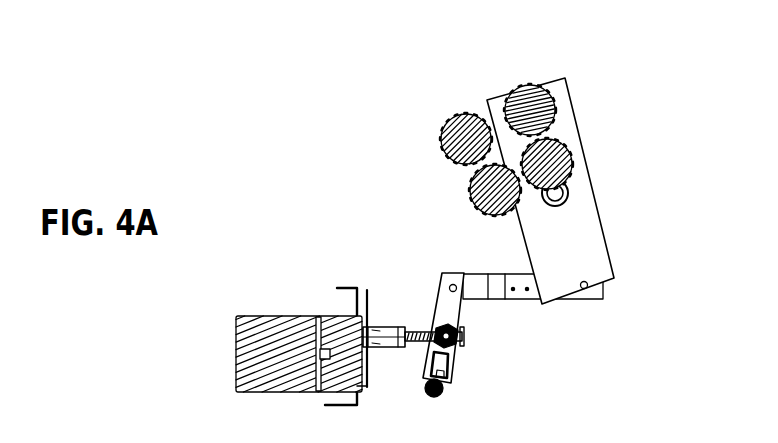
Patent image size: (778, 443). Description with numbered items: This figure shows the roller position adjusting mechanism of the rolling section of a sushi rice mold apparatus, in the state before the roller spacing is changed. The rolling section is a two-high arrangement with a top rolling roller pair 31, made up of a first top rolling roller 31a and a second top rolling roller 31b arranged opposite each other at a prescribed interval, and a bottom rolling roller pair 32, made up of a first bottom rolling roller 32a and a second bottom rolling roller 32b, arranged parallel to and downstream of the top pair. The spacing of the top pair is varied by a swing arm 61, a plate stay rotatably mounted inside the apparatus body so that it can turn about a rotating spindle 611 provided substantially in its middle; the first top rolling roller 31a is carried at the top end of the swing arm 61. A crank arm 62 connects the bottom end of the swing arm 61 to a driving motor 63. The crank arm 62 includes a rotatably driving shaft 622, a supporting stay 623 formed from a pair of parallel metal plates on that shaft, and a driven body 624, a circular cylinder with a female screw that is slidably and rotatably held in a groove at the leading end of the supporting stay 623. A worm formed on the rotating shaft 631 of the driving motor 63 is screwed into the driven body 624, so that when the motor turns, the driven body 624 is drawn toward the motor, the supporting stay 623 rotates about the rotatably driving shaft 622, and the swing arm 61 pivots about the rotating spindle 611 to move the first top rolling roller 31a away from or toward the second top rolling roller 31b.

The top rolling roller pair 31 is at (498, 86).
The first top rolling roller 31a is at (523, 84).
The second top rolling roller 31b is at (462, 112).
The bottom rolling roller pair 32 is at (585, 163).
The first bottom rolling roller 32a is at (572, 149).
The second bottom rolling roller 32b is at (547, 139).
The swing arm 61 is at (575, 191).
The rotating spindle 611 is at (568, 196).
The crank arm 62 is at (474, 358).
The rotatably driving shaft 622 is at (433, 397).
The supporting stay 623 is at (450, 364).
The driven body 624 is at (537, 364).
The driving motor 63 is at (254, 315).
The rotating shaft 631 is at (416, 333).